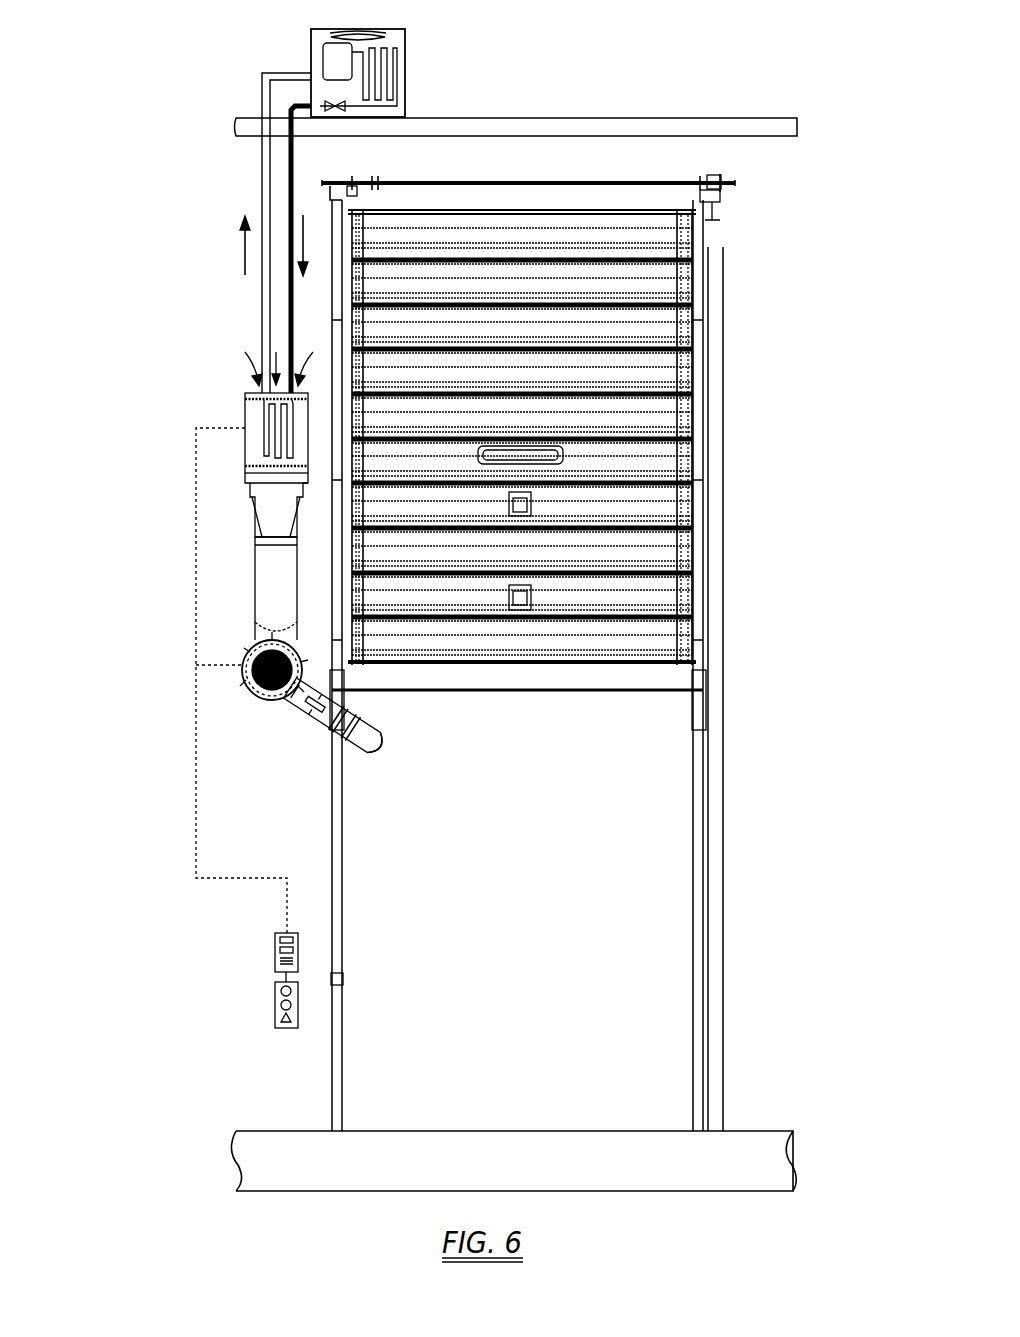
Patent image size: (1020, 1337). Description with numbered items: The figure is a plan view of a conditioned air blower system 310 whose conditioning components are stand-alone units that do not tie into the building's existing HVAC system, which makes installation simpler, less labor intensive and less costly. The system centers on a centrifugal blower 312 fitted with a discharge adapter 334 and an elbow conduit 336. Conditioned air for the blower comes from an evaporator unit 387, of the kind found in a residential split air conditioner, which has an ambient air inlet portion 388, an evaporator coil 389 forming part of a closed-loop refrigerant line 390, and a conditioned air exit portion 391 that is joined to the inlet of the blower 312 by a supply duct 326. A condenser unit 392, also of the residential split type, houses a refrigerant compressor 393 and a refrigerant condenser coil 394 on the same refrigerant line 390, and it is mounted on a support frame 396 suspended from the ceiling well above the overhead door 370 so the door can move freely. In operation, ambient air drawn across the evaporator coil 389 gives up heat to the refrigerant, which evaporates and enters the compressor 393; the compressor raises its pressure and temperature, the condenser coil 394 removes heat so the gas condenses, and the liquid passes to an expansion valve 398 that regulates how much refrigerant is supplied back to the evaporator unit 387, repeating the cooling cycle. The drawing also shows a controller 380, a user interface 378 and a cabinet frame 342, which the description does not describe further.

The conditioned air blower system 310 is at (135, 130).
The condenser unit 392 is at (405, 38).
The refrigerant compressor 393 is at (323, 52).
The refrigerant condenser coil 394 is at (397, 85).
The expansion valve 398 is at (325, 106).
The support frame 396 is at (652, 118).
The closed-loop refrigerant line 390 is at (294, 146).
The ambient air inlet portion 388 is at (247, 354).
The evaporator unit 387 is at (245, 452).
The evaporator coil 389 is at (262, 410).
The conditioned air exit portion 391 is at (270, 510).
The supply duct 326 is at (258, 585).
The centrifugal blower 312 is at (252, 672).
The discharge adapter 334 is at (300, 732).
The elbow conduit 336 is at (383, 755).
The controller 380 is at (275, 955).
The user interface 378 is at (275, 1008).
The cabinet frame 342 is at (553, 934).
The overhead door 370 is at (663, 418).